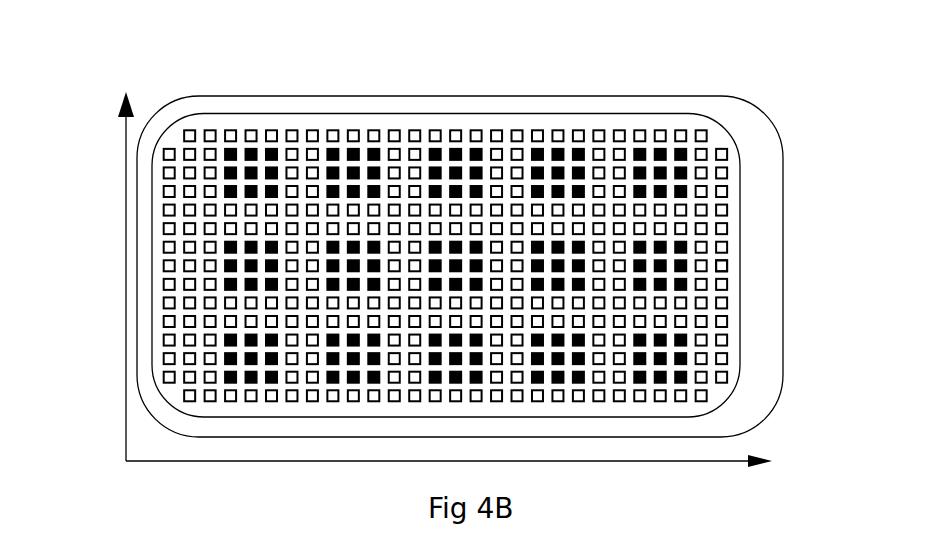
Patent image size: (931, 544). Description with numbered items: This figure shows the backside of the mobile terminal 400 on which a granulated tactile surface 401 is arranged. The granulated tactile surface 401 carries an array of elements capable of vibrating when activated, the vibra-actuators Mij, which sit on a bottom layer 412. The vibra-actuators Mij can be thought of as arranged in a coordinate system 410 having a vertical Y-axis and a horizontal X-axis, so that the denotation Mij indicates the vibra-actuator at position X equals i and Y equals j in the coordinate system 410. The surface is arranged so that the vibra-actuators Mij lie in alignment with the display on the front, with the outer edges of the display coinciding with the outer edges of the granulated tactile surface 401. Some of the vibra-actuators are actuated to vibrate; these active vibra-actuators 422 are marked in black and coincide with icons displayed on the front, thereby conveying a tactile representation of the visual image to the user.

The mobile terminal 400 is at (751, 97).
The granulated tactile surface 401 is at (740, 207).
The coordinate system 410 is at (120, 159).
The bottom layer 412 is at (733, 304).
The active vibra-actuators 422 is at (447, 147).
The vibra-actuator Mij is at (727, 265).